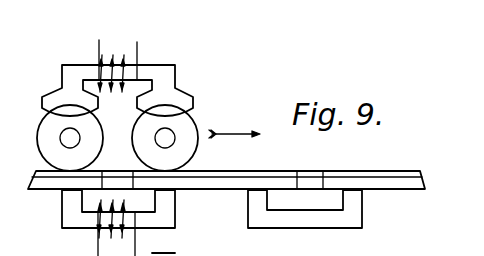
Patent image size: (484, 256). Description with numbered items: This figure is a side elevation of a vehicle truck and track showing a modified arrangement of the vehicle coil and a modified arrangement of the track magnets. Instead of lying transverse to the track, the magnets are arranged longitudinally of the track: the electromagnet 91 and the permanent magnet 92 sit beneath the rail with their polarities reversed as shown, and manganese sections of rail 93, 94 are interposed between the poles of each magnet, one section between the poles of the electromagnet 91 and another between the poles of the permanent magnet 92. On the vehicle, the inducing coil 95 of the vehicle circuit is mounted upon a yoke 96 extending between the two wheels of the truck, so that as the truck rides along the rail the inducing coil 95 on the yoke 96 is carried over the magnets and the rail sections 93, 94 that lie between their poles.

The electromagnet 91 is at (168, 218).
The permanent magnet 92 is at (355, 217).
The manganese section of rail 93 is at (113, 180).
The manganese section of rail 94 is at (307, 178).
The coil 95 is at (103, 62).
The yoke 96 is at (168, 80).